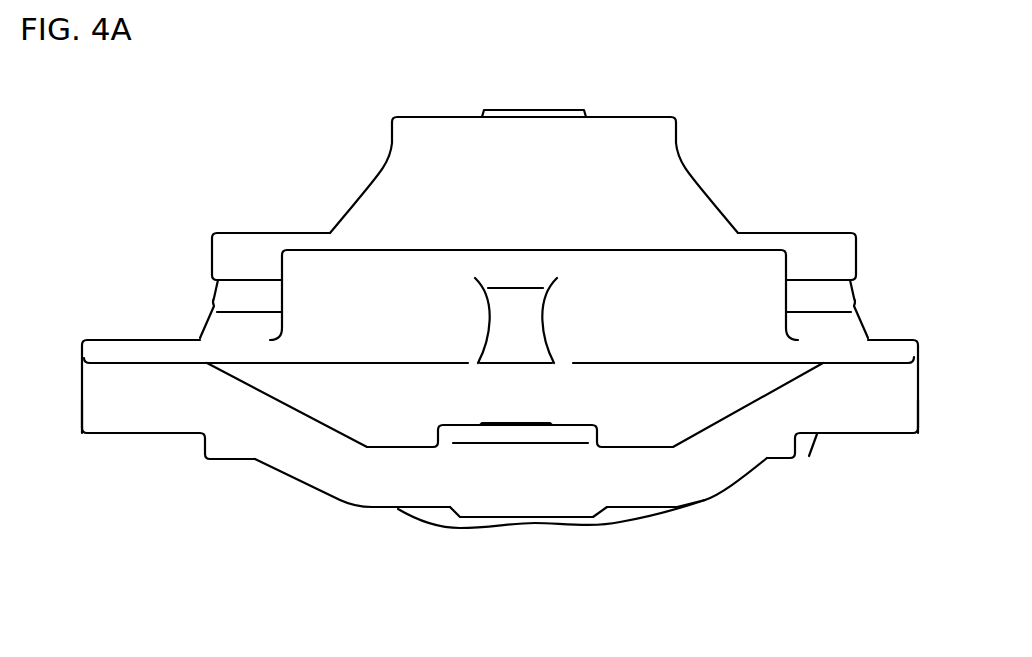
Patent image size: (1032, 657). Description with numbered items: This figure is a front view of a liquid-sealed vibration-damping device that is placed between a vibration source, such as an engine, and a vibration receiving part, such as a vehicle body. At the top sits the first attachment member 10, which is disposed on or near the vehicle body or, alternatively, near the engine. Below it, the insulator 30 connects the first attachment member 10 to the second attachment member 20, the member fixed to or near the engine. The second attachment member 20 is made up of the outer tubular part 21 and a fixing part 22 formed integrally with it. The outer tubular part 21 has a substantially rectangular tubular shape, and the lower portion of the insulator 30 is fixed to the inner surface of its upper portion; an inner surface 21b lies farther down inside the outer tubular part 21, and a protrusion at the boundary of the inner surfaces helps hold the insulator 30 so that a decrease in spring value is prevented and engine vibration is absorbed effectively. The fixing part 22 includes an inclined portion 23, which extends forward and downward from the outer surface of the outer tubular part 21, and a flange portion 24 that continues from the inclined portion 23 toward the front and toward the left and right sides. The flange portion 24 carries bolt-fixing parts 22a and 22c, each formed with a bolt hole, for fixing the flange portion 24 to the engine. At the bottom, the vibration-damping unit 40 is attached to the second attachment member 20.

The first attachment member 10 is at (562, 108).
The insulator 30 is at (690, 122).
The second attachment member 20 is at (308, 246).
The outer tubular part 21 is at (755, 268).
The inner surface 21b is at (533, 495).
The fixing part 22 is at (713, 504).
The bolt-fixing part 22a is at (140, 417).
The bolt-fixing part 22c is at (880, 417).
The inclined portion 23 is at (637, 385).
The flange portion 24 is at (283, 452).
The vibration-damping unit 40 is at (402, 522).